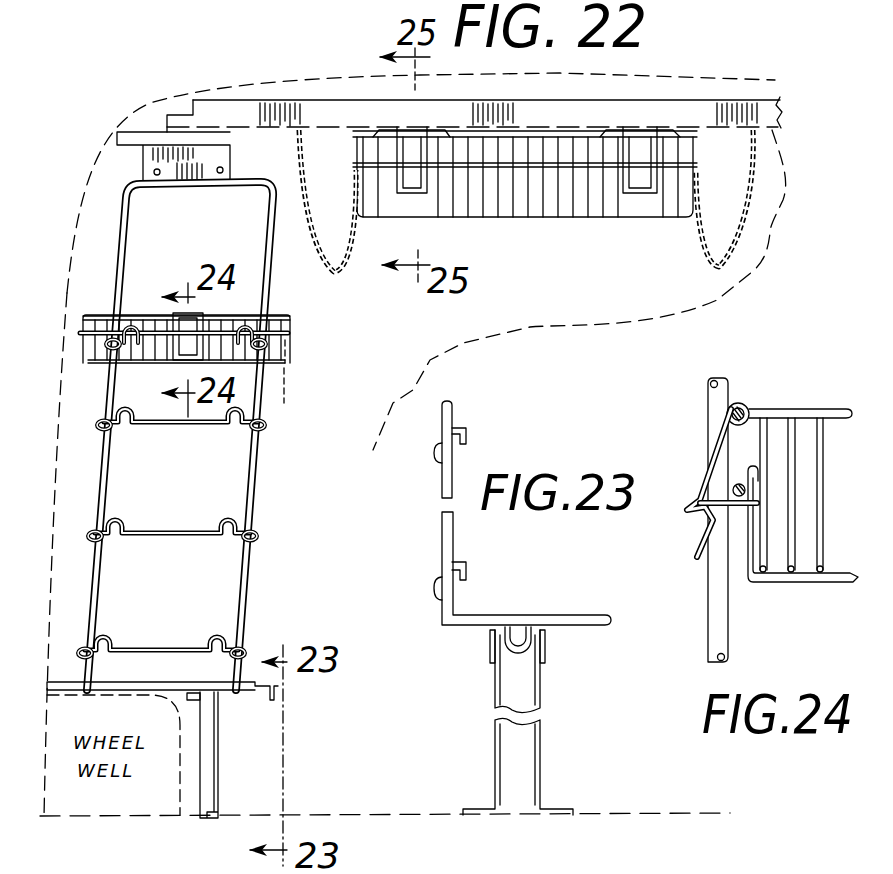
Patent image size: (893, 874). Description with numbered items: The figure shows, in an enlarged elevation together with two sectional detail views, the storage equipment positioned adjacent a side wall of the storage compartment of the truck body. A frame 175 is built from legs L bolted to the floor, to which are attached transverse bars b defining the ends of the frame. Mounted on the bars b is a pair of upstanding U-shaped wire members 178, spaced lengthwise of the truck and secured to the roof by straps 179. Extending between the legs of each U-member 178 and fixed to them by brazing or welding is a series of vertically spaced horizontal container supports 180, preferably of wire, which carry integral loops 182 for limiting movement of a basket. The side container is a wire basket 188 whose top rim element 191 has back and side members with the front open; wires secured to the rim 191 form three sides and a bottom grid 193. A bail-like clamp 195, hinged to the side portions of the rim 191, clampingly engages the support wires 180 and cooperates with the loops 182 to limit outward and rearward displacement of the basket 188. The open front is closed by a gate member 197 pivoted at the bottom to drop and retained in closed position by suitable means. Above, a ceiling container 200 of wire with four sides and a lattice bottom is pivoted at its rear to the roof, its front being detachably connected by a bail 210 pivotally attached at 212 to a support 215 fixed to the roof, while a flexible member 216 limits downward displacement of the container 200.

In FIG. 22, the frame 175 is at (261, 475).
In FIG. 23, the frame 175 is at (457, 412).
In FIG. 24, the frame 175 is at (706, 624).
In FIG. 22, the upstanding U-shaped wire member 178 is at (250, 513).
In FIG. 23, the upstanding U-shaped wire member 178 is at (443, 537).
In FIG. 24, the upstanding U-shaped wire member 178 is at (708, 596).
In FIG. 22, the strap 179 is at (143, 163).
In FIG. 22, the horizontal container support 180 is at (145, 350).
In FIG. 23, the horizontal container support 180 is at (436, 457).
In FIG. 24, the horizontal container support 180 is at (693, 503).
In FIG. 22, the integral loop 182 is at (118, 415).
In FIG. 23, the integral loop 182 is at (467, 436).
In FIG. 24, the integral loop 182 is at (760, 485).
In FIG. 22, the basket 188 is at (294, 313).
In FIG. 24, the basket 188 is at (828, 404).
In FIG. 22, the top rim element 191 is at (103, 316).
In FIG. 24, the top rim element 191 is at (807, 408).
In FIG. 24, the bottom grid 193 is at (833, 588).
In FIG. 22, the bail-like clamp 195 is at (180, 362).
In FIG. 24, the bail-like clamp 195 is at (700, 472).
In FIG. 22, the gate member 197 is at (290, 332).
In FIG. 22, the ceiling container 200 is at (518, 222).
In FIG. 22, the bail 210 is at (420, 196).
In FIG. 22, the pivotal attachment 212 is at (409, 128).
In FIG. 22, the support 215 is at (518, 100).
In FIG. 22, the flexible member 216 is at (355, 232).
In FIG. 22, the transverse bar b is at (262, 690).
In FIG. 23, the transverse bar b is at (497, 628).
In FIG. 22, the leg L is at (218, 752).
In FIG. 23, the leg L is at (495, 745).